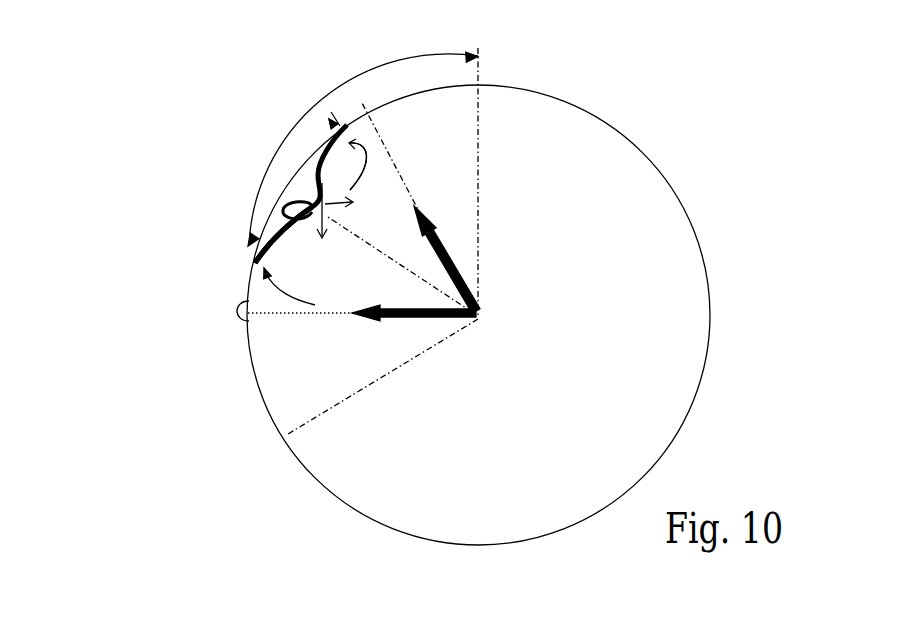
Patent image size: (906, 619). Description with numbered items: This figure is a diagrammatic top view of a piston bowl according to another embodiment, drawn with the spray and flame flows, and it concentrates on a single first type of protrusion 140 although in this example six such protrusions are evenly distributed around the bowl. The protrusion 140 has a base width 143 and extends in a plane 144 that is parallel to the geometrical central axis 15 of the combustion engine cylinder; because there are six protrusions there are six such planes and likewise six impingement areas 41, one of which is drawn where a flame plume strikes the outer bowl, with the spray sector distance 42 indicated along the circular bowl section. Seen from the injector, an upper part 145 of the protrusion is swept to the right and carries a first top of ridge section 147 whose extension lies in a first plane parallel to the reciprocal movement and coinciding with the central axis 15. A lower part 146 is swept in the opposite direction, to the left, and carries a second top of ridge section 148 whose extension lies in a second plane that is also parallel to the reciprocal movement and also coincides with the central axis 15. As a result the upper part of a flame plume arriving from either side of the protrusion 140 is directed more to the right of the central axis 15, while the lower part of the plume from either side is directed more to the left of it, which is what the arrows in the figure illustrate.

The geometrical central axis 15 is at (476, 313).
The impingement area 41 is at (240, 302).
The spray sector distance 42 is at (390, 63).
The first type of protrusion 140 is at (295, 202).
The base width 143 is at (278, 207).
The plane 144 is at (412, 273).
The upper part of the protrusion 145 is at (312, 190).
The lower part of the protrusion 146 is at (248, 245).
The first top of ridge section 147 is at (266, 163).
The second top of ridge section 148 is at (248, 245).